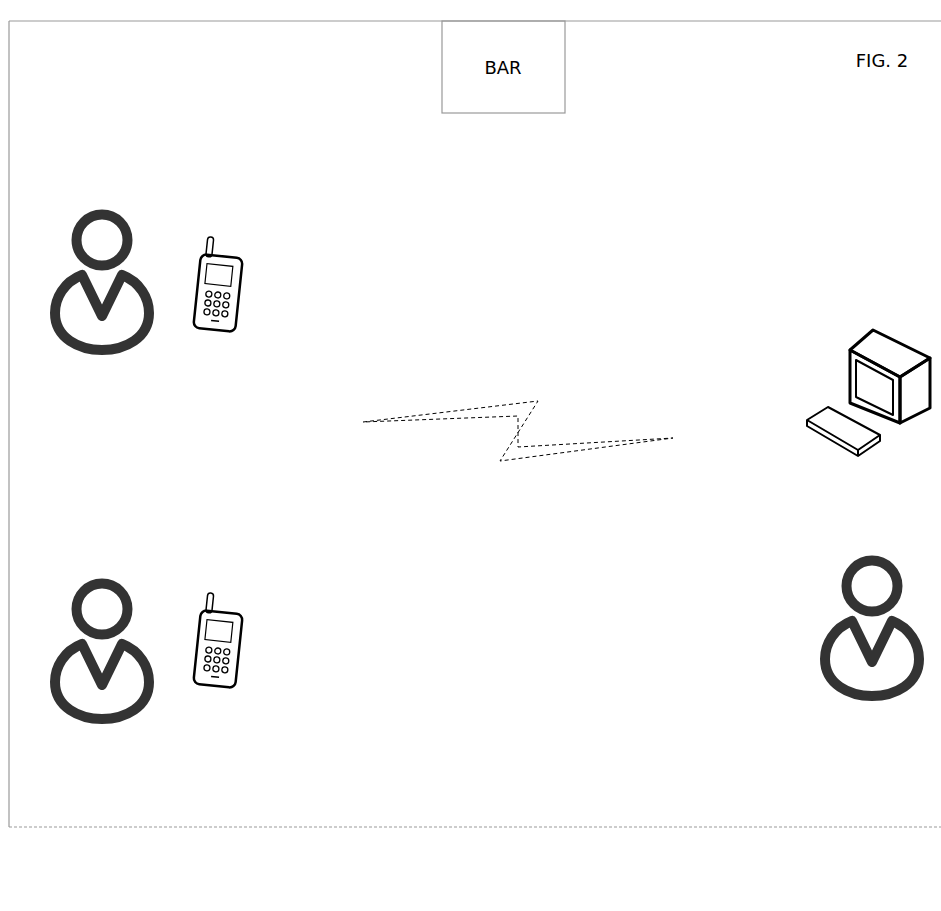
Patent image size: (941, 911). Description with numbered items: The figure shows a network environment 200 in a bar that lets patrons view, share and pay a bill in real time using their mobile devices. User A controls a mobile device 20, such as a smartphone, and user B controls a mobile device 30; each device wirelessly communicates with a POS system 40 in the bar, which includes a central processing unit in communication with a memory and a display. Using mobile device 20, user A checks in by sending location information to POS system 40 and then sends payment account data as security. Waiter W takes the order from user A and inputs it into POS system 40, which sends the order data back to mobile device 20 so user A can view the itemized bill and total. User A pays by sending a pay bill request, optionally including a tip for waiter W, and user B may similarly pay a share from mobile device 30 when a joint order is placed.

The mobile device 20 is at (217, 690).
The mobile device 30 is at (217, 252).
The POS system 40 is at (868, 330).
The network environment 200 is at (497, 796).
The user A is at (101, 725).
The user B is at (101, 208).
The waiter W is at (873, 705).